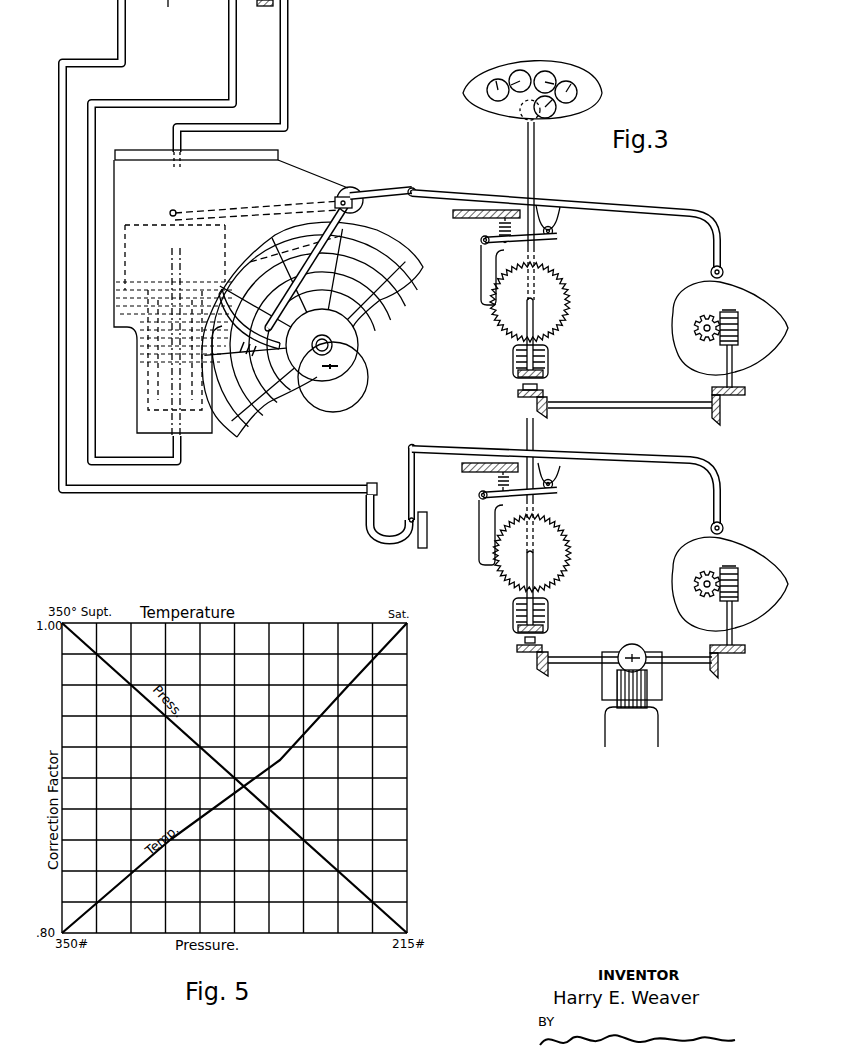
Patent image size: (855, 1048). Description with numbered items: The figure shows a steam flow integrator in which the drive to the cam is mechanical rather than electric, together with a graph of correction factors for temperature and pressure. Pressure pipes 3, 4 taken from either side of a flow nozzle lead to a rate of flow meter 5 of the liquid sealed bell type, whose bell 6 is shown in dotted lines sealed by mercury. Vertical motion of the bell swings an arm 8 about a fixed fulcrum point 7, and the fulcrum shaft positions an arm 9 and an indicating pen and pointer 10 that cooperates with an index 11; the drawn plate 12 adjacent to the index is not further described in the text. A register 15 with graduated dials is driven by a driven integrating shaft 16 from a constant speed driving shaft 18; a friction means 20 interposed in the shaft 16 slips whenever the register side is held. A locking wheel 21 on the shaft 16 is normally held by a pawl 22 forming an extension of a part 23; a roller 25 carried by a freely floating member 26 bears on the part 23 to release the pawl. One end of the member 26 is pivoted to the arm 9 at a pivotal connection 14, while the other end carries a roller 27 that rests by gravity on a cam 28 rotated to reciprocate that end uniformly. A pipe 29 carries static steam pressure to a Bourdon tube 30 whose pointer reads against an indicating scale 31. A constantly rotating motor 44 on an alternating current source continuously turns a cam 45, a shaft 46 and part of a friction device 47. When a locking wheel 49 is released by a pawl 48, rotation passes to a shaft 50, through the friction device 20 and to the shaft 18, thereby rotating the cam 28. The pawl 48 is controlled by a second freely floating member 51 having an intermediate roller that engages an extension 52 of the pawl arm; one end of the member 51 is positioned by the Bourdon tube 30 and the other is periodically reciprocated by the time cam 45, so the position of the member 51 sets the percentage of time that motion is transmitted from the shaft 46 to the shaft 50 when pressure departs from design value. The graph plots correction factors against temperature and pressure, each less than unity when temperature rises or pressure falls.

The pressure pipe 3 is at (235, 70).
The pressure pipe 4 is at (287, 76).
The rate of flow meter 5 is at (230, 294).
The bell 6 is at (150, 282).
The fixed fulcrum point 7 is at (348, 192).
The arm 8 is at (235, 207).
The arm 9 is at (369, 192).
The indicating pen and pointer 10 is at (318, 254).
The index 11 is at (249, 327).
The cam plate 12 is at (396, 292).
The pivotal connection 14 is at (414, 188).
The register 15 is at (578, 72).
The driven integrating shaft 16 is at (538, 172).
The constant speed driving shaft 18 is at (590, 410).
The friction means 20 is at (513, 370).
The locking wheel 21 is at (576, 310).
The pawl 22 is at (481, 305).
The part 23 is at (557, 242).
The roller 25 is at (556, 231).
The freely floating member 26 is at (603, 204).
The roller 27 is at (725, 275).
The cam 28 is at (779, 312).
The pipe 29 is at (125, 62).
The Bourdon tube 30 is at (367, 546).
The indicating scale 31 is at (428, 526).
The constantly rotating motor 44 is at (662, 683).
The cam 45 is at (765, 568).
The shaft 46 is at (523, 641).
The friction device 47 is at (513, 612).
The pawl 48 is at (478, 560).
The locking wheel 49 is at (568, 548).
The shaft 50 is at (526, 410).
The freely floating member 51 is at (442, 444).
The extension 52 is at (553, 494).